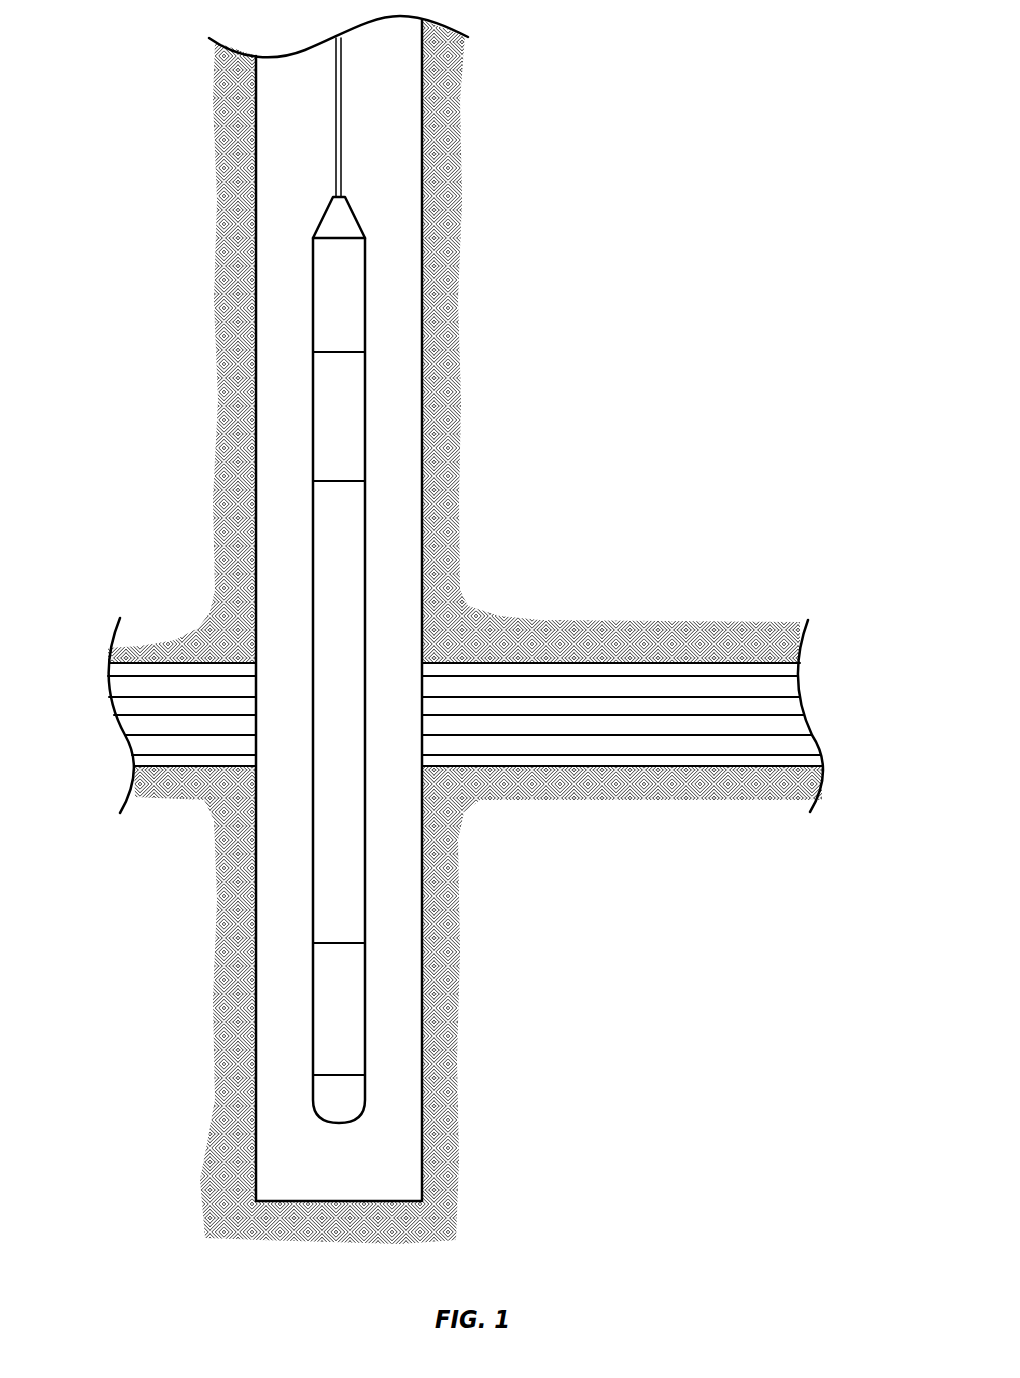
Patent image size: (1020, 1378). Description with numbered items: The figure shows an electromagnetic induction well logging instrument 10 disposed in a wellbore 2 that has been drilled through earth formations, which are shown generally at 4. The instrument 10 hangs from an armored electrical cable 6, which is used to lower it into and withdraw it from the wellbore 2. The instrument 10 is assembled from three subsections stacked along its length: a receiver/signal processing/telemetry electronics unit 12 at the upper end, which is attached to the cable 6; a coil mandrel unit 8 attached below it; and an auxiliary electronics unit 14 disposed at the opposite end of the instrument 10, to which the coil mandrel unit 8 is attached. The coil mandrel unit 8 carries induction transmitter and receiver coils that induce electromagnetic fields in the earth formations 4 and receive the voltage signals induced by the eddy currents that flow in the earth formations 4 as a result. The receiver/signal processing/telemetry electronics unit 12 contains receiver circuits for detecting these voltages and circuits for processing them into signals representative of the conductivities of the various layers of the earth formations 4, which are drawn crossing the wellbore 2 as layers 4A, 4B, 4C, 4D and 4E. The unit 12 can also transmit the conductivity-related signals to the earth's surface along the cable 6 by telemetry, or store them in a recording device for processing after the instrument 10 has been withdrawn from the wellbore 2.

The wellbore 2 is at (398, 155).
The earth formations 4 is at (476, 715).
The layer of the earth formations 4A is at (797, 668).
The layer of the earth formations 4B is at (797, 688).
The layer of the earth formations 4C is at (805, 727).
The layer of the earth formations 4D is at (810, 741).
The layer of the earth formations 4E is at (815, 760).
The armored electrical cable 6 is at (338, 127).
The coil mandrel unit 8 is at (328, 671).
The electromagnetic induction well logging instrument 10 is at (391, 580).
The receiver/signal processing/telemetry electronics unit 12 is at (328, 408).
The auxiliary electronics unit 14 is at (328, 1015).